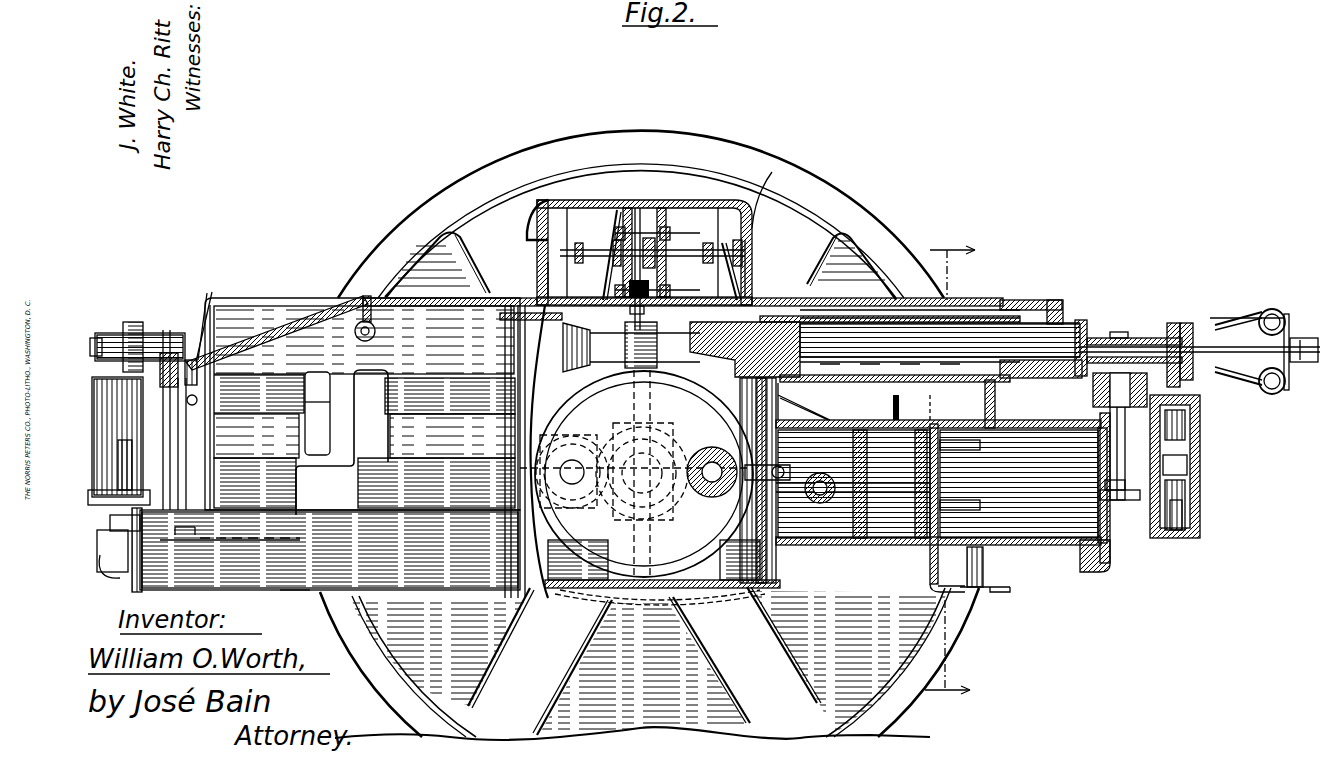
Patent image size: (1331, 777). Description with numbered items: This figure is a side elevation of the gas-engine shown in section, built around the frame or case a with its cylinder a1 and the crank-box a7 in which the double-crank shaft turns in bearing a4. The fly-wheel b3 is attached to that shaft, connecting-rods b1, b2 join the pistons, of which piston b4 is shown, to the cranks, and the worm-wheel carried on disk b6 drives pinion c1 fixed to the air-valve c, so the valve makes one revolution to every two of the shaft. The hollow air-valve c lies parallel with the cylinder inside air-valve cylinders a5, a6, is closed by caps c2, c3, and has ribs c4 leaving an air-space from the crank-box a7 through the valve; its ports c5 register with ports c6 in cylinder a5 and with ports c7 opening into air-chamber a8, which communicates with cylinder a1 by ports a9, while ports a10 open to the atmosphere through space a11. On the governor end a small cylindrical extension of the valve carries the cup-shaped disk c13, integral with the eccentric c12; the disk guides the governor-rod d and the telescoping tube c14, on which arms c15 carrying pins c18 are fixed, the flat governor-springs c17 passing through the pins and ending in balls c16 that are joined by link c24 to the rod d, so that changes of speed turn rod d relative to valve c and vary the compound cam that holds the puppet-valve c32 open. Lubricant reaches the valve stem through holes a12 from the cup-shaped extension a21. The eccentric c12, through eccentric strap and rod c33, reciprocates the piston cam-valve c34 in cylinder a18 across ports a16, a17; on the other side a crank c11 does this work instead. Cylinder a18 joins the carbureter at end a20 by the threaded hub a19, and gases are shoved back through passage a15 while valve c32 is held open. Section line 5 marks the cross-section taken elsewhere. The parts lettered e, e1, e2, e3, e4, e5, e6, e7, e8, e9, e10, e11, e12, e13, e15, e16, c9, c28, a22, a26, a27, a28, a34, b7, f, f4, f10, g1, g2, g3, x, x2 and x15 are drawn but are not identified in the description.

The fly-wheel b3 is at (672, 122).
The gear casing e is at (756, 275).
The vertical shaft e1 is at (637, 277).
The partition e2 is at (666, 274).
The partition e3 is at (628, 268).
The rod e4 is at (680, 206).
The gear e5 is at (646, 310).
The horizontal shaft e6 is at (666, 235).
The plate e7 is at (587, 252).
The plate e8 is at (718, 278).
The casing wall e9 is at (760, 268).
The casing wall e10 is at (540, 292).
The bracket e11 is at (745, 230).
The bracket e12 is at (572, 212).
The pin e13 is at (930, 407).
The lever bar e15 is at (302, 333).
The link e16 is at (250, 340).
The air-valve c is at (1060, 336).
The pinion c1 is at (631, 347).
The cap c2 is at (1082, 335).
The cap c3 is at (204, 300).
The ribs c4 is at (745, 349).
The ports c5 is at (895, 369).
The ports c6 is at (835, 315).
The ports c7 is at (1165, 306).
The nut c9 is at (135, 322).
The crank c11 is at (112, 330).
The eccentric c12 is at (1172, 322).
The cup-shaped disk c13 is at (1188, 325).
The telescoping tube c14 is at (1304, 340).
The arms c15 is at (1238, 348).
The governor-balls c16 is at (1275, 310).
The governor-springs c17 is at (1240, 312).
The pins c18 is at (1230, 396).
The link c24 is at (1288, 320).
The shell c28 is at (1048, 360).
The puppet cut-off valve c32 is at (1108, 498).
The eccentric strap and rod c33 is at (1190, 410).
The piston cam-valve c34 is at (1195, 450).
The frame or case a is at (544, 448).
The cylinder a1 is at (1118, 338).
The bearing a4 is at (704, 456).
The air-valve cylinder a5 is at (1064, 312).
The air-valve cylinder a6 is at (386, 334).
The crank-box a7 is at (642, 455).
The air-chamber a8 is at (938, 405).
The ports a9 is at (943, 455).
The ports a10 is at (972, 530).
The space a11 is at (977, 569).
The holes a12 is at (1115, 470).
The passage a15 is at (1128, 505).
The port a16 is at (1195, 484).
The port a17 is at (1200, 478).
The cylinder a18 is at (1190, 428).
The central threaded hub a19 is at (320, 616).
The end a20 is at (1197, 525).
The cup-shaped extension a21 is at (1100, 405).
The packing box a22 is at (1093, 395).
The lug a26 is at (1025, 300).
The lug a27 is at (1060, 302).
The bearing a28 is at (818, 504).
The plug a34 is at (1178, 515).
The connecting-rod b1 is at (584, 440).
The connecting-rod b2 is at (700, 500).
The piston b4 is at (960, 478).
The disk b6 is at (682, 388).
The bearing b7 is at (790, 480).
The valve block f is at (119, 441).
The valve f4 is at (113, 545).
The pin f10 is at (668, 395).
The pin g1 is at (200, 378).
The pin g2 is at (198, 404).
The rod g3 is at (182, 368).
The barrel x is at (326, 550).
The valve stem x2 is at (119, 465).
The barrel rod x15 is at (224, 553).
The governor-rod d is at (1041, 339).
The section line 5 is at (950, 472).